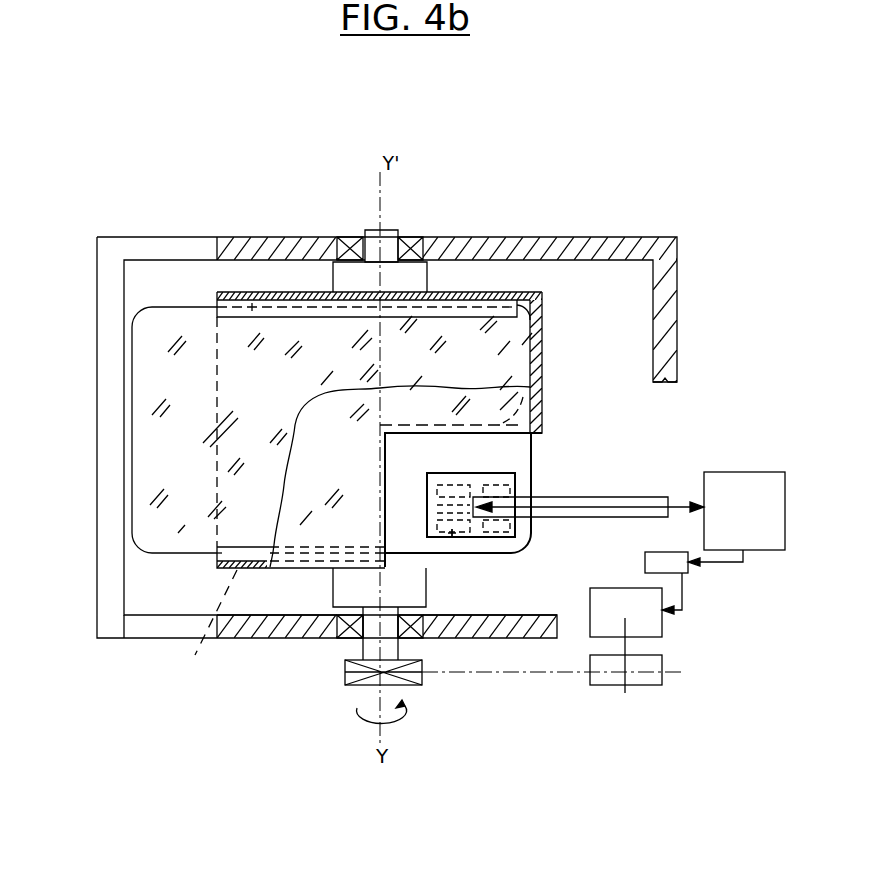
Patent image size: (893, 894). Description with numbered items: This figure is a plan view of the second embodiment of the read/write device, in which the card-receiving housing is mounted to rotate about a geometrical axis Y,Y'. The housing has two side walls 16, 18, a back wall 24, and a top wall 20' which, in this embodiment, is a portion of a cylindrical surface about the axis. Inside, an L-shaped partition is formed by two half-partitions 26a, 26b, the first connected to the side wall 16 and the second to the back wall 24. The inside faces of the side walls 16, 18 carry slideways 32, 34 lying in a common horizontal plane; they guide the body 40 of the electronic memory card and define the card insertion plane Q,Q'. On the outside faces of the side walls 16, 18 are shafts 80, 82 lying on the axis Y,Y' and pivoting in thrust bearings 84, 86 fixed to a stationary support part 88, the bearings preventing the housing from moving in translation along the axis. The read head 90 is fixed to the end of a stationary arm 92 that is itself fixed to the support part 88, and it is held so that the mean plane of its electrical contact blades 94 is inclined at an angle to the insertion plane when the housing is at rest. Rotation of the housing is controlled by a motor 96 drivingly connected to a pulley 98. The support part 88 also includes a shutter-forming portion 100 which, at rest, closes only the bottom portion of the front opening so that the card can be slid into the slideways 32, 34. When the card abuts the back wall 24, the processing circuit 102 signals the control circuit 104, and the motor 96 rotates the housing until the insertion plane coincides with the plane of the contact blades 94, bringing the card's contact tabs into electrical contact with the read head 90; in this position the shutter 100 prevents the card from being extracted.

The side wall 16 is at (237, 568).
The side wall 18 is at (290, 291).
The top wall 20' is at (389, 476).
The back wall 24 is at (542, 331).
The half-partition 26a is at (375, 483).
The half-partition 26b is at (553, 390).
The slideway 32 is at (252, 306).
The slideway 34 is at (201, 620).
The card body 40 is at (150, 357).
The shaft 80 is at (422, 281).
The shaft 82 is at (374, 648).
The thrust bearing 84 is at (350, 240).
The thrust bearing 86 is at (348, 638).
The stationary support part 88 is at (245, 639).
The read head 90 is at (485, 536).
The stationary arm 92 is at (620, 500).
The electrical contact blades 94 is at (455, 538).
The motor 96 is at (600, 598).
The pulley 98 is at (420, 677).
The shutter-forming portion 100 is at (108, 519).
The processing circuit 102 is at (757, 488).
The control circuit 104 is at (650, 553).